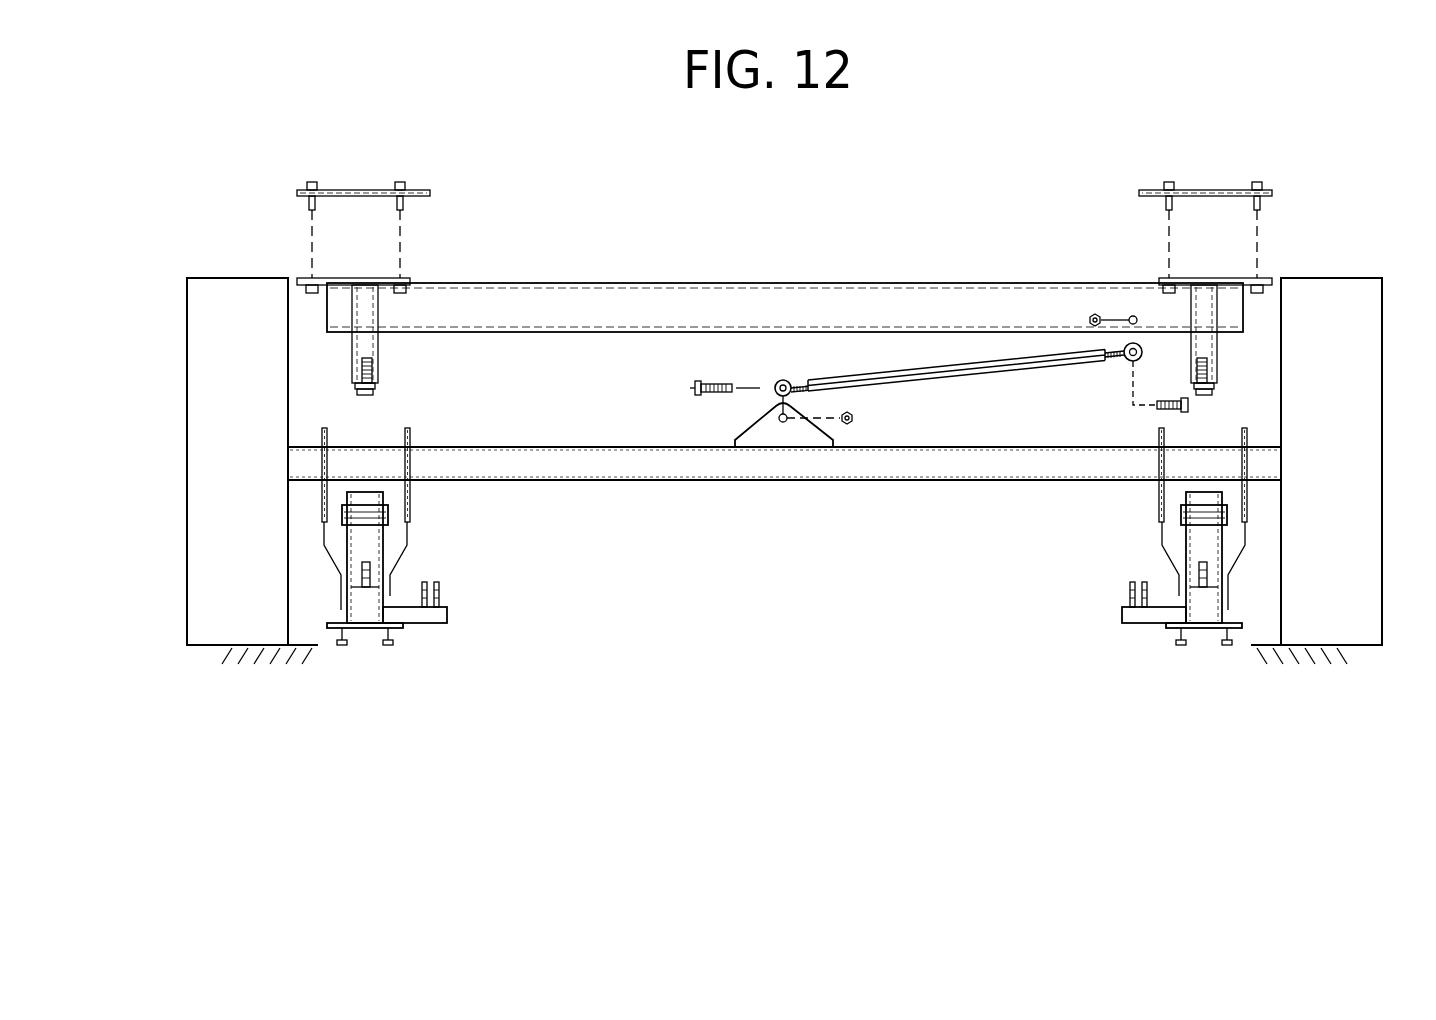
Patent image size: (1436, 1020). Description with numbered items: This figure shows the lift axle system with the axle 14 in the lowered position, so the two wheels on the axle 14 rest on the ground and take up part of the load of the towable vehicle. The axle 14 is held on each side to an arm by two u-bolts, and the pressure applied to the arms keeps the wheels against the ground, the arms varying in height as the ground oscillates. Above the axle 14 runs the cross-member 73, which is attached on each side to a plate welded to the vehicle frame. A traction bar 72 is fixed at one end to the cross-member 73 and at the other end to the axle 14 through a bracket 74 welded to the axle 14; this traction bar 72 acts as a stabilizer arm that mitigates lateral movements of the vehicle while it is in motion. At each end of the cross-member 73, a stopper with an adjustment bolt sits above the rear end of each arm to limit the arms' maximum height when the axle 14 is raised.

The axle 14 is at (680, 468).
The traction bar 72 is at (963, 352).
The cross-member 73 is at (718, 297).
The bracket 74 is at (805, 440).